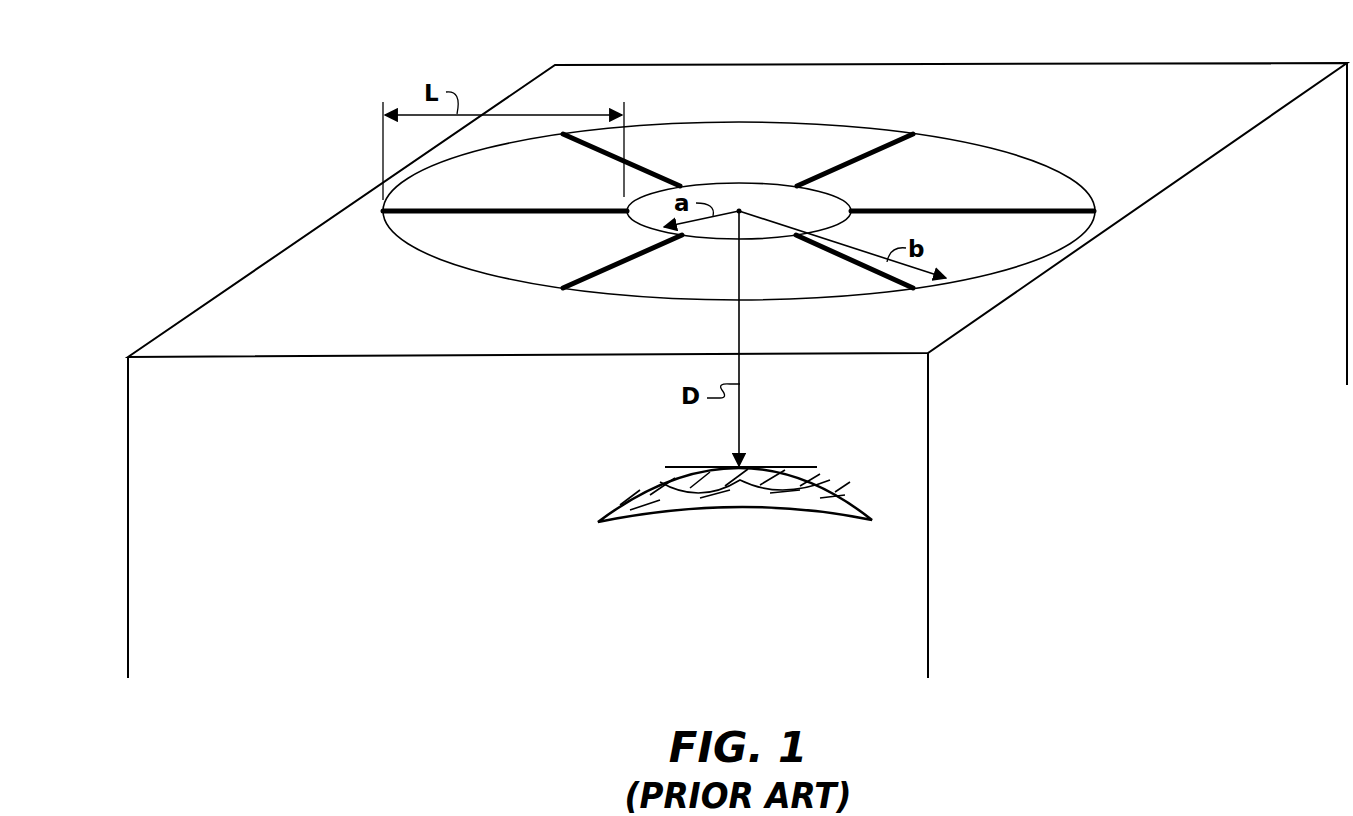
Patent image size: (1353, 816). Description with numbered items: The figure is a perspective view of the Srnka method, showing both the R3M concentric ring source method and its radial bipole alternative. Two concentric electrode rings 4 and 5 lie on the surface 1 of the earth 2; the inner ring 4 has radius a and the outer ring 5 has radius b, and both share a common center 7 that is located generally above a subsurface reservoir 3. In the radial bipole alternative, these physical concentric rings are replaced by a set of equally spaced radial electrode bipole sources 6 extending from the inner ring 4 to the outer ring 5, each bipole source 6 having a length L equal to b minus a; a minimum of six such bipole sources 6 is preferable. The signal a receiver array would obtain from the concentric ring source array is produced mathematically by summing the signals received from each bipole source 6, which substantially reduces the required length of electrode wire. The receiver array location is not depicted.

The surface 1 is at (314, 316).
The earth 2 is at (395, 524).
The reservoir 3 is at (623, 496).
The concentric electrode ring 4 is at (722, 185).
The concentric electrode ring 5 is at (983, 141).
The radial electrode bipole source 6 is at (643, 172).
The center 7 is at (741, 206).